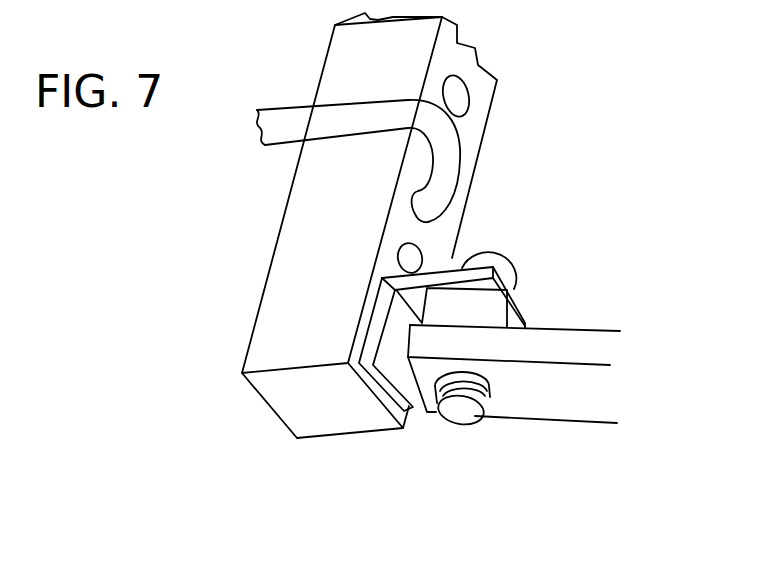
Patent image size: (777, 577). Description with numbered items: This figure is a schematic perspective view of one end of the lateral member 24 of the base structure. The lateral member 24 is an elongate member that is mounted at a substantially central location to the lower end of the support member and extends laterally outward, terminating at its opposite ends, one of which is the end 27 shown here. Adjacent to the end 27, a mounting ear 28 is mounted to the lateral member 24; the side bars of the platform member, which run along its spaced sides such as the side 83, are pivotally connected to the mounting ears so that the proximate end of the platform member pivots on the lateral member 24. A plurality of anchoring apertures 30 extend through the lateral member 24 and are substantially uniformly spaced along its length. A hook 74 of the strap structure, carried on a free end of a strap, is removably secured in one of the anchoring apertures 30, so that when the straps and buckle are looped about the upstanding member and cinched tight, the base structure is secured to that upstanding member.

The lateral member 24 is at (291, 225).
The end of the lateral member 27 is at (262, 337).
The mounting ear 28 is at (523, 303).
The anchoring aperture 30 is at (457, 97).
The hook 74 is at (447, 160).
The side of the platform member 83 is at (577, 408).